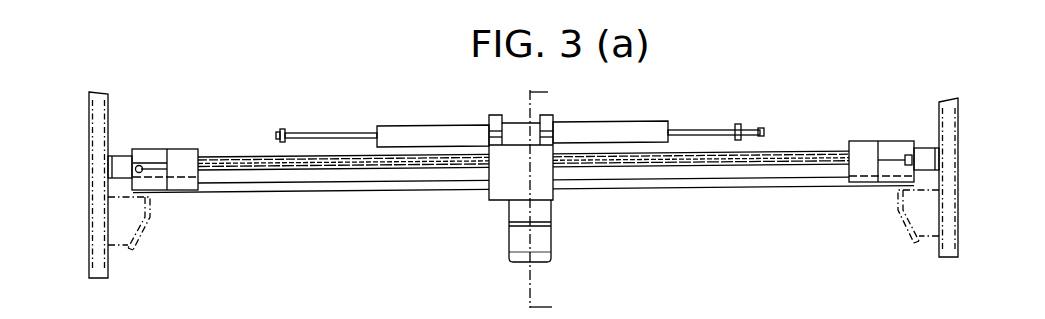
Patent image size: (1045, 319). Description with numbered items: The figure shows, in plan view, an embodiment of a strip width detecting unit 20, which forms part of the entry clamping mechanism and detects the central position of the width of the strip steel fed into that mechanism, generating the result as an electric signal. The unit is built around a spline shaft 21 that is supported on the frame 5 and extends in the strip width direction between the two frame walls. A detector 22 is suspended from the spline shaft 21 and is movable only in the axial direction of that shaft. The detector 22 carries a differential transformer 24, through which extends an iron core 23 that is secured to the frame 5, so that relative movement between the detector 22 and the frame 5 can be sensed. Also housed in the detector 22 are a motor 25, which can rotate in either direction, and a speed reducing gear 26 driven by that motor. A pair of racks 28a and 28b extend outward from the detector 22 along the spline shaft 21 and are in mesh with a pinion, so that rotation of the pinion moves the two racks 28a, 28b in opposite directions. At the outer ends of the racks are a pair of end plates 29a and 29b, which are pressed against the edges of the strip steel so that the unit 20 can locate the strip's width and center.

The frame 5 is at (952, 233).
The strip width detecting unit 20 is at (523, 192).
The spline shaft 21 is at (790, 156).
The detector 22 is at (494, 201).
The iron core 23 is at (312, 131).
The differential transformer 24 is at (413, 127).
The motor 25 is at (536, 253).
The speed reducing gear 26 is at (541, 209).
The rack 28a is at (352, 190).
The rack 28b is at (738, 180).
The end plate 29a is at (136, 153).
The end plate 29b is at (912, 143).